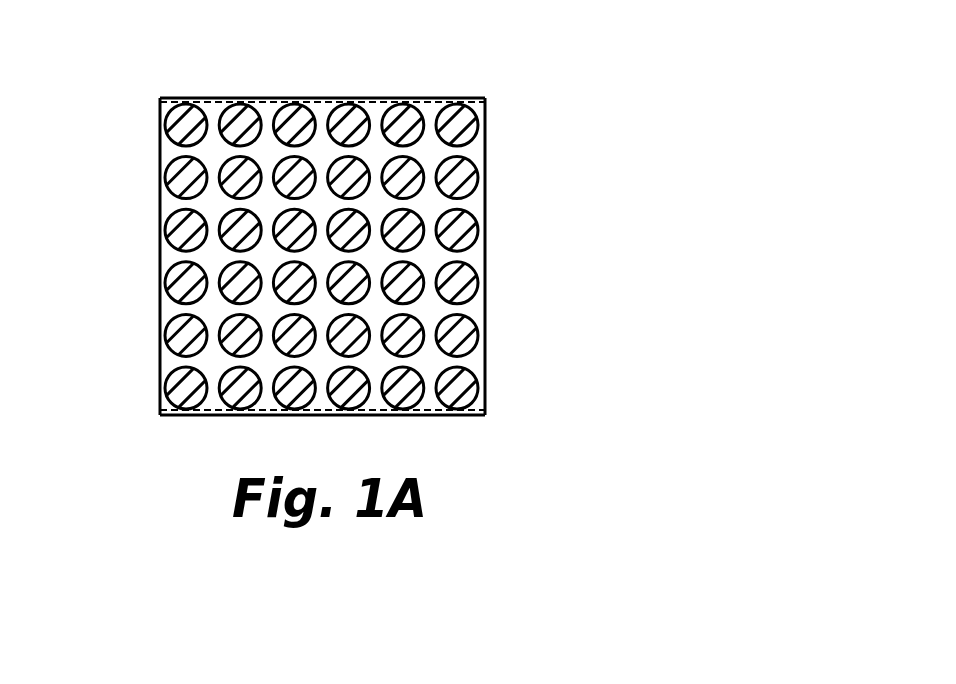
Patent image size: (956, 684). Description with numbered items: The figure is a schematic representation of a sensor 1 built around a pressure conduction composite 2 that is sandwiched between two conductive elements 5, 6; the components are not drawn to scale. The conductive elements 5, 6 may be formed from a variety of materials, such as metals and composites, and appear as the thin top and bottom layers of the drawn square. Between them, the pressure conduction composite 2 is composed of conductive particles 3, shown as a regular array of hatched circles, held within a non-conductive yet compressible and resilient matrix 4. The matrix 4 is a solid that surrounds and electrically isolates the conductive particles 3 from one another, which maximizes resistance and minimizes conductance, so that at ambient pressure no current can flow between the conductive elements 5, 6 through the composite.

The sensor 1 is at (339, 84).
The pressure conduction composite 2 is at (493, 252).
The conductive particles 3 is at (170, 330).
The matrix 4 is at (168, 203).
The conductive element 5 is at (485, 100).
The conductive element 6 is at (485, 411).